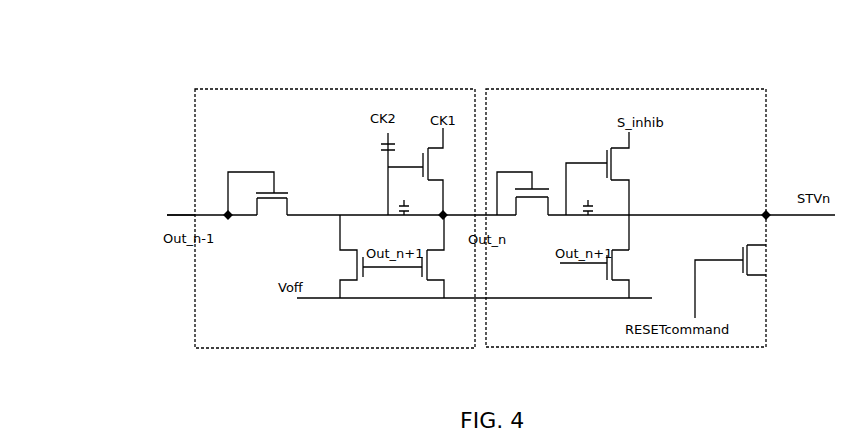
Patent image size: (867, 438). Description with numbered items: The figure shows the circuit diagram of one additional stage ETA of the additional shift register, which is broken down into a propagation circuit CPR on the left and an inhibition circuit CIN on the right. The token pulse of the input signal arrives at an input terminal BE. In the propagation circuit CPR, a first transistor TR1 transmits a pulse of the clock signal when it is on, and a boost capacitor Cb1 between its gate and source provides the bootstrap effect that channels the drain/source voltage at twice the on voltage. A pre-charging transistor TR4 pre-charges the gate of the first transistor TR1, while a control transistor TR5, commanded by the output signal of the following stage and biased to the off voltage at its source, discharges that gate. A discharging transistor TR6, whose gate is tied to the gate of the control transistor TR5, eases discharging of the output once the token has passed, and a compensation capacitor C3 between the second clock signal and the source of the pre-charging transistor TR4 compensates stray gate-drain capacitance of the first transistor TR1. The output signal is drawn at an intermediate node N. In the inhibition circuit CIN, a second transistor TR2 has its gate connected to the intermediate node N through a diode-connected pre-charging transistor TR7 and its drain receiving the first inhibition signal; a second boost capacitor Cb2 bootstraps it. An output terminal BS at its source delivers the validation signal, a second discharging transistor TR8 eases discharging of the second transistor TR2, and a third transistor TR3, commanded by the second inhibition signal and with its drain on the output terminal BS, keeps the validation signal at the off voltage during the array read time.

The first transistor TR1 is at (426, 171).
The second transistor TR2 is at (612, 191).
The third transistor TR3 is at (736, 281).
The pre-charging transistor TR4 is at (258, 209).
The control transistor TR5 is at (368, 256).
The discharging transistor TR6 is at (439, 256).
The diode-connected pre-charging transistor TR7 is at (523, 202).
The second discharging transistor TR8 is at (607, 274).
The boost capacitor Cb1 is at (400, 216).
The second boost capacitor Cb2 is at (585, 216).
The compensation capacitor C3 is at (373, 148).
The propagation circuit CPR is at (268, 87).
The inhibition circuit CIN is at (588, 88).
The additional stage ETA is at (150, 218).
The input terminal BE is at (219, 208).
The output terminal BS is at (755, 205).
The intermediate node N is at (452, 206).